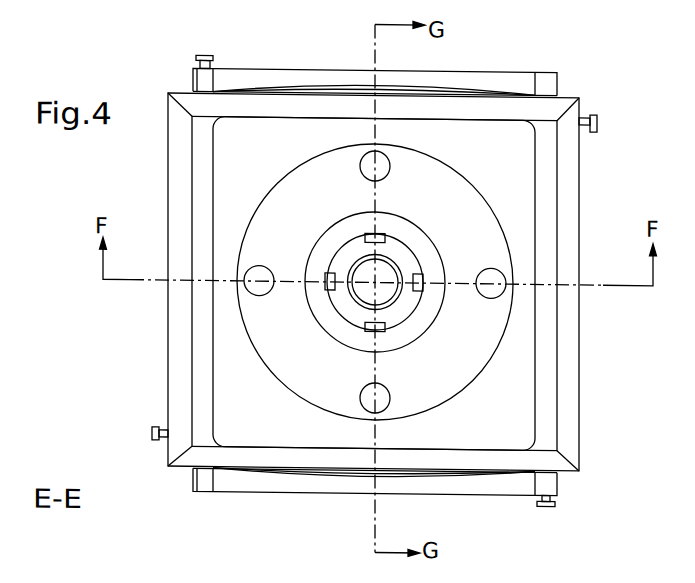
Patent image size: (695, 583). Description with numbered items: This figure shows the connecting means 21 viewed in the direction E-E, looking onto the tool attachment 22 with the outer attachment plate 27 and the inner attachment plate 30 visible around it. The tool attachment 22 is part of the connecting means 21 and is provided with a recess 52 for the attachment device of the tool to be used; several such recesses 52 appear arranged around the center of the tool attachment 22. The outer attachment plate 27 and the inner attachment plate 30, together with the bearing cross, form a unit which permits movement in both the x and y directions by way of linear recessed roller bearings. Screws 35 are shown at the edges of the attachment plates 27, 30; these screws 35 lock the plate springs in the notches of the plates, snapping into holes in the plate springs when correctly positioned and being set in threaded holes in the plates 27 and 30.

The connecting means 21 is at (629, 217).
The tool attachment 22 is at (480, 341).
The outer attachment plate 27 is at (168, 320).
The inner attachment plate 30 is at (505, 68).
The screw 35 is at (204, 56).
The recess 52 is at (368, 160).